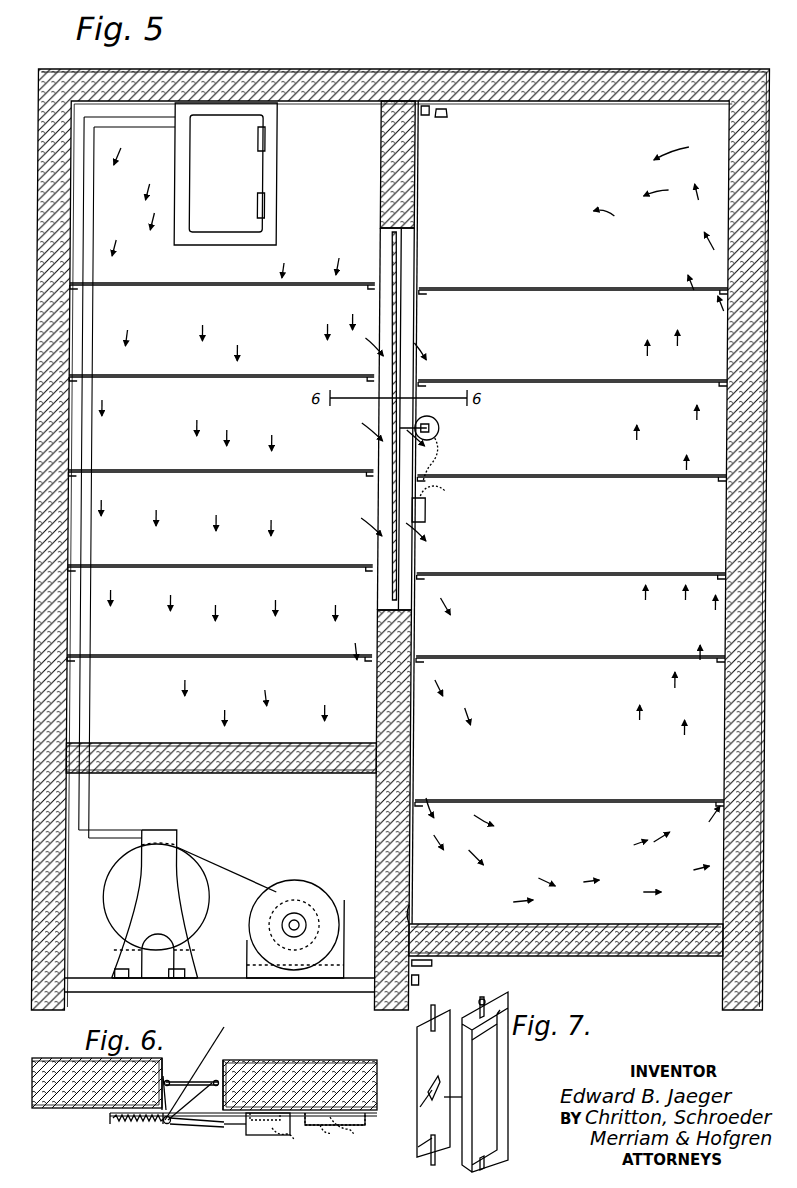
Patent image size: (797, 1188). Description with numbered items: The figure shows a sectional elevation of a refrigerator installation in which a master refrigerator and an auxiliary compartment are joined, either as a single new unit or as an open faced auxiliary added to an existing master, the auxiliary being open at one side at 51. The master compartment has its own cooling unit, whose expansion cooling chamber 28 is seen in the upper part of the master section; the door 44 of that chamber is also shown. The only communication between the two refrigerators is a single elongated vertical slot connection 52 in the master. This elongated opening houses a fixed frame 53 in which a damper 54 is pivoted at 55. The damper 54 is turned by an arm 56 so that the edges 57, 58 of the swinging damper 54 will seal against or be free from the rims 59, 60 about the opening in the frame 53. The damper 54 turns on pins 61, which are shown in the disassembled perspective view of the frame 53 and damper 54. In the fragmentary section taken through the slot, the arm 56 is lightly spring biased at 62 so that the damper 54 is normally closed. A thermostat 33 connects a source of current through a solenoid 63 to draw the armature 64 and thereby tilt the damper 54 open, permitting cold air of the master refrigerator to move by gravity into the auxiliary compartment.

In FIG. 5, the expansion cooling chamber 28 is at (279, 210).
In FIG. 5, the heater door 44 is at (227, 173).
In FIG. 5, the thermostat 33 is at (430, 514).
In FIG. 6, the thermostat 33 is at (356, 1126).
In FIG. 5, the open side 51 is at (417, 912).
In FIG. 5, the elongated vertical slot connection 52 is at (382, 583).
In FIG. 6, the elongated vertical slot connection 52 is at (165, 1064).
In FIG. 5, the fixed frame 53 is at (403, 546).
In FIG. 6, the fixed frame 53 is at (222, 1066).
In FIG. 7, the fixed frame 53 is at (508, 1048).
In FIG. 5, the damper 54 is at (396, 505).
In FIG. 6, the damper 54 is at (186, 1078).
In FIG. 7, the damper 54 is at (428, 1049).
In FIG. 5, the pivot 55 is at (396, 233).
In FIG. 6, the pivot 55 is at (203, 1065).
In FIG. 7, the pivot 55 is at (509, 1165).
In FIG. 5, the arm 56 is at (434, 418).
In FIG. 6, the arm 56 is at (190, 1100).
In FIG. 7, the arm 56 is at (421, 1105).
In FIG. 6, the damper edge 57 is at (192, 1075).
In FIG. 7, the damper edge 57 is at (418, 1148).
In FIG. 6, the damper edge 58 is at (214, 1125).
In FIG. 7, the damper edge 58 is at (444, 1097).
In FIG. 6, the rim 59 is at (166, 1124).
In FIG. 7, the rim 59 is at (478, 1002).
In FIG. 7, the rim 60 is at (492, 1067).
In FIG. 7, the pins 61 is at (430, 1017).
In FIG. 6, the spring 62 is at (133, 1122).
In FIG. 5, the solenoid 63 is at (443, 430).
In FIG. 6, the solenoid 63 is at (260, 1136).
In FIG. 6, the armature 64 is at (236, 1126).